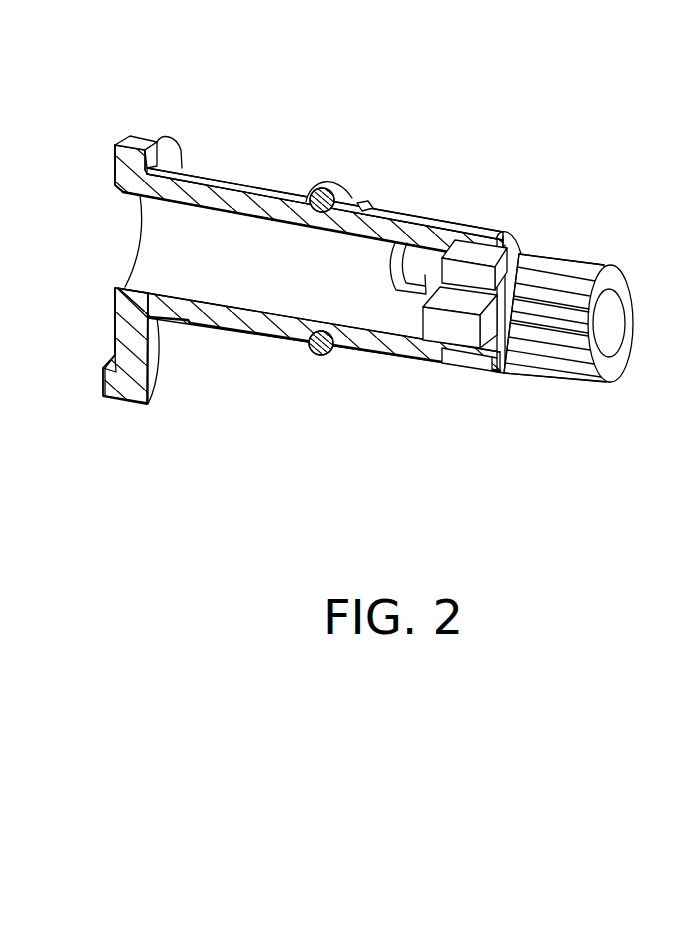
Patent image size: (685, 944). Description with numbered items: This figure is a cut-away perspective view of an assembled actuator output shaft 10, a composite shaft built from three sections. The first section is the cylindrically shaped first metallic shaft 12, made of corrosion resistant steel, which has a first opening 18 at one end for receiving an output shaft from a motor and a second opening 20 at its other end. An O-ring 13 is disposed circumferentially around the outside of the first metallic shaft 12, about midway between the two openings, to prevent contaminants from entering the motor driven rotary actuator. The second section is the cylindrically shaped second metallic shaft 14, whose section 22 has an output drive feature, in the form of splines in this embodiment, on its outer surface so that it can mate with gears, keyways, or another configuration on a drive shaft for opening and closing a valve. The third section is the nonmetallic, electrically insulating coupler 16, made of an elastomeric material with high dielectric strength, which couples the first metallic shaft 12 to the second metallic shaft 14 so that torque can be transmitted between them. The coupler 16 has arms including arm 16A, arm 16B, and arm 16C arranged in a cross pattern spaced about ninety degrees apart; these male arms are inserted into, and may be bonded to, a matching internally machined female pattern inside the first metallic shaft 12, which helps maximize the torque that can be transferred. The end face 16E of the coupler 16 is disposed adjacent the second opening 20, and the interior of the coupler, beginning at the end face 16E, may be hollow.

The actuator output shaft 10 is at (400, 155).
The first metallic shaft 12 is at (231, 182).
The O-ring 13 is at (333, 183).
The second metallic shaft 14 is at (588, 246).
The coupler 16 is at (432, 376).
The arm 16A is at (457, 250).
The arm 16B is at (443, 332).
The arm 16C is at (463, 358).
The end face 16E is at (504, 374).
The first opening 18 is at (137, 240).
The second opening 20 is at (515, 240).
The section 22 is at (560, 384).